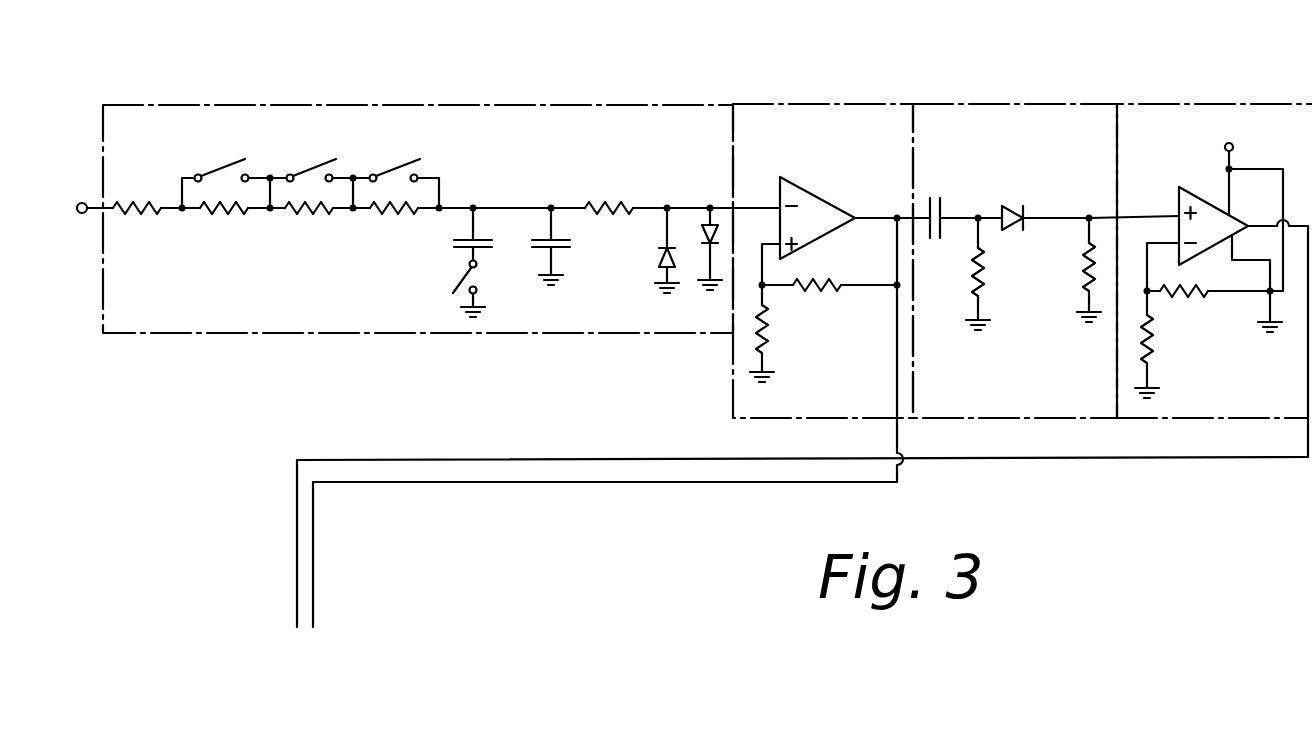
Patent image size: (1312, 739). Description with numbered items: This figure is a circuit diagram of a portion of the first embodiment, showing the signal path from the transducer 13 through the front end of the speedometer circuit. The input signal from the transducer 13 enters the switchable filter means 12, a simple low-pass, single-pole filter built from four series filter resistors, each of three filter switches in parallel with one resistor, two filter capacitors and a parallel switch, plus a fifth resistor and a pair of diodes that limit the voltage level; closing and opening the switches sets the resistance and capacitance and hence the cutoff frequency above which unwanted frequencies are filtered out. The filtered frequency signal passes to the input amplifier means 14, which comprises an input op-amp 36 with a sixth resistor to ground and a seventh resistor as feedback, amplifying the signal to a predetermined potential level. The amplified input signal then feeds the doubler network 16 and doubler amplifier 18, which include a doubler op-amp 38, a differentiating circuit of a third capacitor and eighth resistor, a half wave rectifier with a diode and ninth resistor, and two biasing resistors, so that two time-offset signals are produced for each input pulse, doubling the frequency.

The switchable filter means 12 is at (507, 105).
The transducer 13 is at (80, 203).
The input amplifier means 14 is at (822, 104).
The doubler network 16 is at (1022, 104).
The doubler amplifier 18 is at (1196, 104).
The input op-amp 36 is at (815, 207).
The doubler op-amp 38 is at (1216, 223).